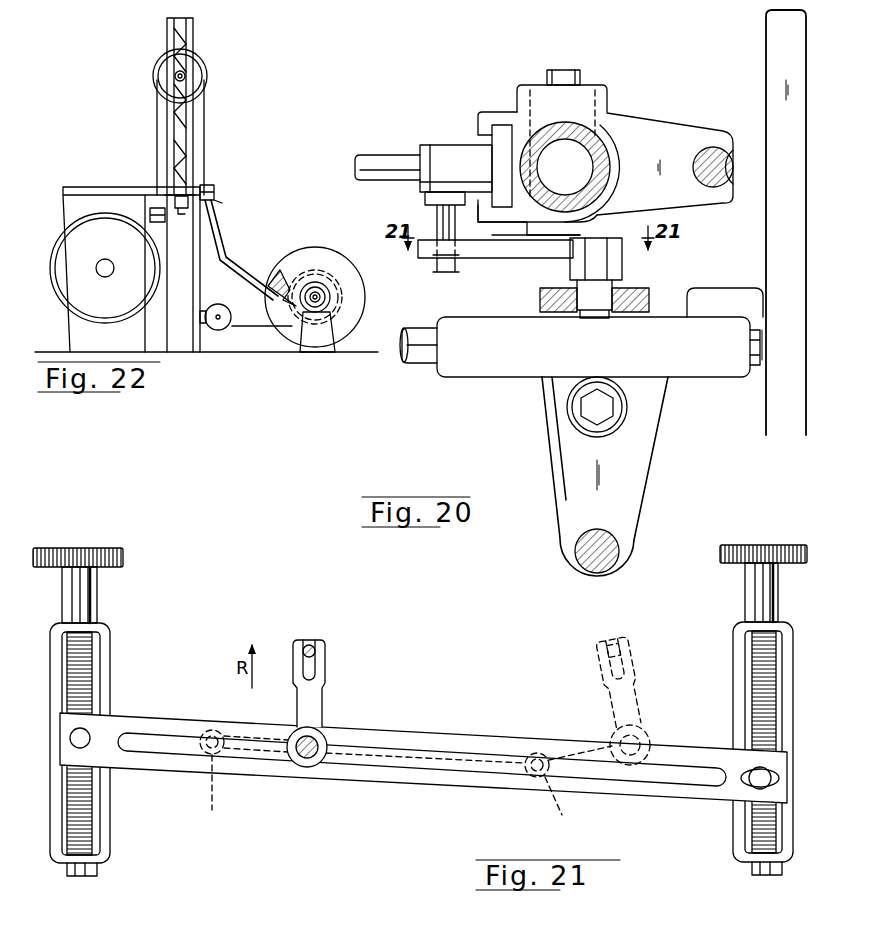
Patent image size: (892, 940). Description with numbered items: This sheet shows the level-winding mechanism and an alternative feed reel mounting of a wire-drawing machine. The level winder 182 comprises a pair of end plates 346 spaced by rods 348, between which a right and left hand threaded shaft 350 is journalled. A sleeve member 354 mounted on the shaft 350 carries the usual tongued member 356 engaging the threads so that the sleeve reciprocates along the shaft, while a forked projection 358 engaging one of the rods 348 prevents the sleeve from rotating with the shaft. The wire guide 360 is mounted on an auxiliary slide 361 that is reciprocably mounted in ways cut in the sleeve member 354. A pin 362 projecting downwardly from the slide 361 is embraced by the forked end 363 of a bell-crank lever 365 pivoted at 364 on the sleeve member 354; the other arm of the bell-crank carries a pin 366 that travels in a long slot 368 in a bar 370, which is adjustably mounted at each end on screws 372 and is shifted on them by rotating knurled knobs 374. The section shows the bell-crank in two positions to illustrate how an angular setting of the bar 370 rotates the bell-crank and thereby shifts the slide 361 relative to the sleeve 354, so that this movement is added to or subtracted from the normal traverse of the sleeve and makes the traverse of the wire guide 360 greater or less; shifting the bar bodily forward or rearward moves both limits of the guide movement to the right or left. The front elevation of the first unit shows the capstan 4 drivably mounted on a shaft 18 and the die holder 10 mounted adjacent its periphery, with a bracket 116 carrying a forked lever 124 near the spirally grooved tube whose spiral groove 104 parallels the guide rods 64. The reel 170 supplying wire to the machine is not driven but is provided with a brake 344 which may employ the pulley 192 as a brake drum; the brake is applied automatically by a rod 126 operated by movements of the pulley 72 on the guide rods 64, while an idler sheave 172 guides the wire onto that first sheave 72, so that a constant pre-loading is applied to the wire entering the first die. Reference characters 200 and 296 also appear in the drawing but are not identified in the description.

In FIG. 22, the capstan 4 is at (103, 308).
In FIG. 22, the die holder 10 is at (149, 210).
In FIG. 22, the shaft 18 is at (100, 262).
In FIG. 22, the guide rods 64 is at (190, 156).
In FIG. 22, the sheave 72 is at (203, 62).
In FIG. 22, the spiral groove 104 is at (180, 118).
In FIG. 22, the bracket 116 is at (176, 197).
In FIG. 22, the lever 124 is at (215, 191).
In FIG. 22, the rod 126 is at (222, 235).
In FIG. 22, the reel 170 is at (348, 300).
In FIG. 22, the idler sheave 172 is at (220, 325).
In FIG. 20, the level winder 182 is at (600, 70).
In FIG. 22, the pulley 192 is at (332, 283).
In FIG. 22, the belt 200 is at (205, 132).
In FIG. 22, the wheel support 296 is at (320, 335).
In FIG. 22, the brake 344 is at (312, 272).
In FIG. 20, the end plates 346 is at (553, 462).
In FIG. 20, the rods 348 is at (713, 165).
In FIG. 20, the right and left hand threaded shaft 350 is at (600, 138).
In FIG. 20, the sleeve member 354 is at (515, 118).
In FIG. 20, the tongued member 356 is at (538, 98).
In FIG. 20, the forked projection 358 is at (645, 147).
In FIG. 20, the wire guide 360 is at (390, 163).
In FIG. 20, the auxiliary slide 361 is at (500, 165).
In FIG. 20, the pin 362 is at (443, 230).
In FIG. 21, the pin 362 is at (309, 645).
In FIG. 20, the forked end 363 is at (430, 250).
In FIG. 21, the forked end 363 is at (318, 658).
In FIG. 21, the pivot 364 is at (312, 760).
In FIG. 20, the bell-crank lever 365 is at (517, 248).
In FIG. 21, the bell-crank lever 365 is at (312, 710).
In FIG. 20, the pin 366 is at (595, 295).
In FIG. 21, the pin 366 is at (404, 787).
In FIG. 20, the long slot 368 is at (650, 296).
In FIG. 21, the long slot 368 is at (450, 763).
In FIG. 20, the bar 370 is at (555, 300).
In FIG. 21, the bar 370 is at (487, 779).
In FIG. 21, the screws 372 is at (88, 676).
In FIG. 20, the knurled knobs 374 is at (412, 352).
In FIG. 21, the knurled knobs 374 is at (80, 556).